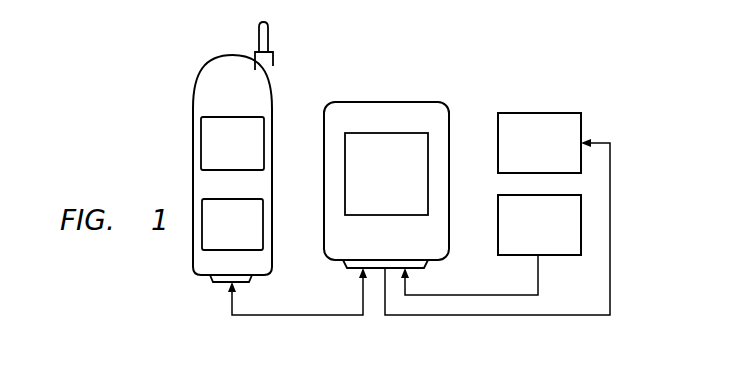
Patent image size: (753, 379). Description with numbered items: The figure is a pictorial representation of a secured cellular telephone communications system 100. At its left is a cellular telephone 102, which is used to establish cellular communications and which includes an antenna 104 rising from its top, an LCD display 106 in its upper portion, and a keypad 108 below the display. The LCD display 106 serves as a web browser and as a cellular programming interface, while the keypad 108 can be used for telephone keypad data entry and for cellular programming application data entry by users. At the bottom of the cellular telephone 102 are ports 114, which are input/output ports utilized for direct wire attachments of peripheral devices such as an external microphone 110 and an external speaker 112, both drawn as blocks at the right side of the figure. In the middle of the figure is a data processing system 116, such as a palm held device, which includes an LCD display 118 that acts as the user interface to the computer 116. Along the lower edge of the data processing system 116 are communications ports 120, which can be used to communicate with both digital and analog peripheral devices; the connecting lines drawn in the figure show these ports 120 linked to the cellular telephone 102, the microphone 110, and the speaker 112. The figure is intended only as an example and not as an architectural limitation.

The communication system 100 is at (158, 88).
The cellular telephone 102 is at (193, 143).
The antenna 104 is at (272, 40).
The LCD display 106 is at (252, 156).
The keypad 108 is at (251, 236).
The external microphone 110 is at (561, 238).
The external speaker 112 is at (561, 158).
The ports 114 is at (211, 278).
The data processing system 116 is at (397, 102).
The LCD display 118 is at (407, 187).
The communications ports 120 is at (345, 267).